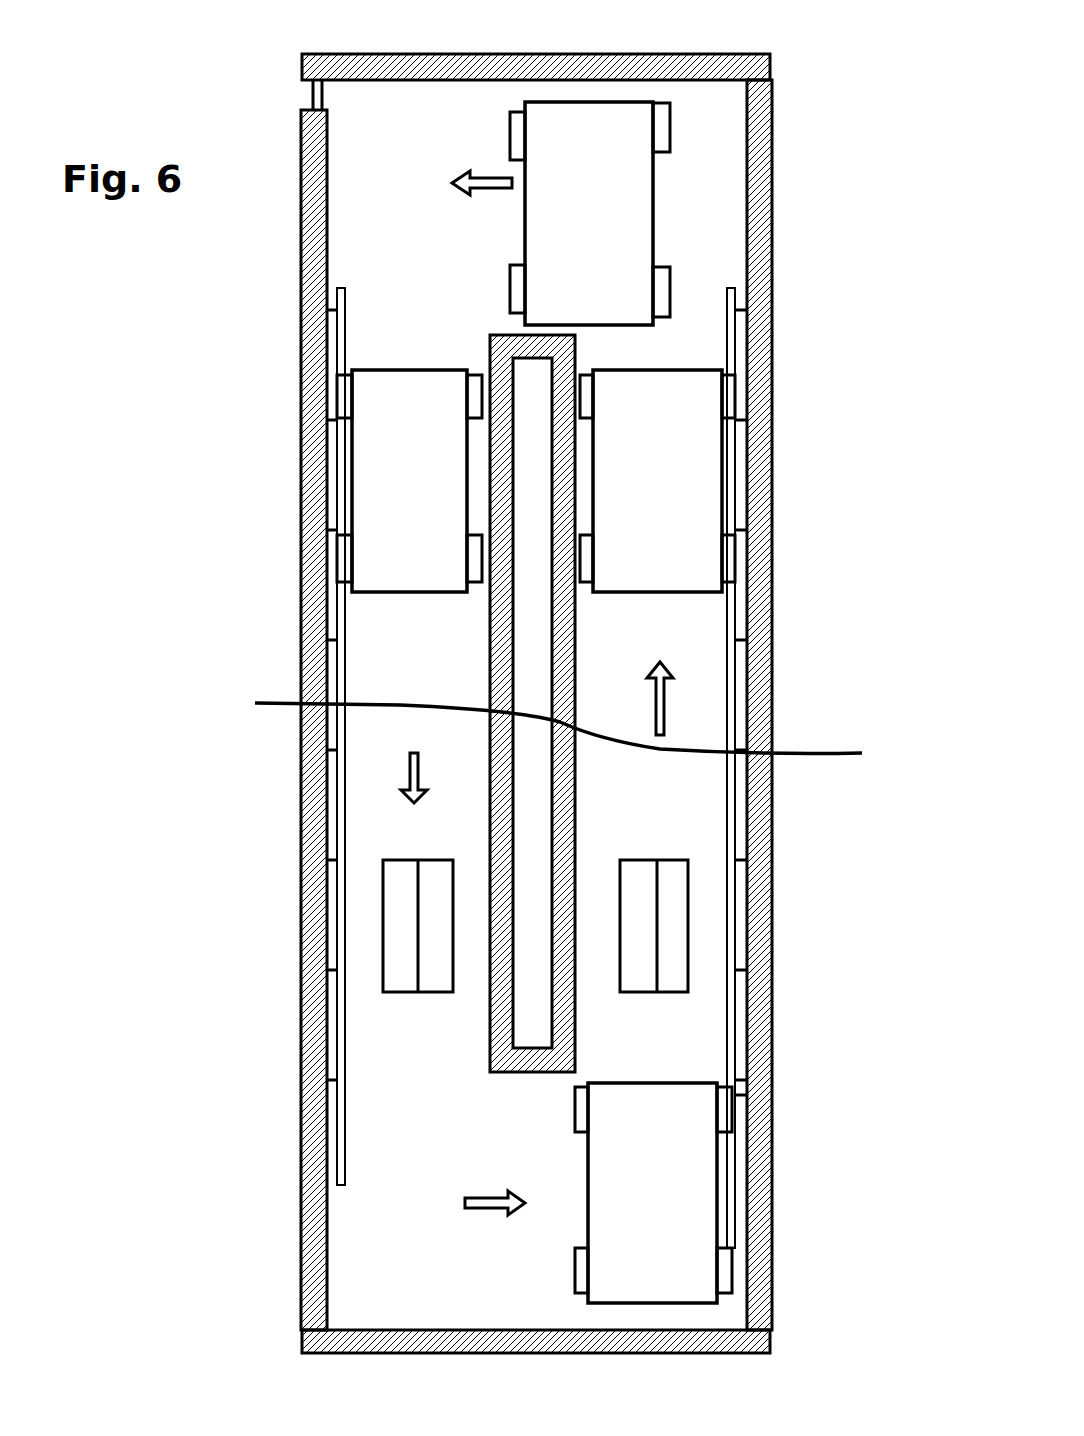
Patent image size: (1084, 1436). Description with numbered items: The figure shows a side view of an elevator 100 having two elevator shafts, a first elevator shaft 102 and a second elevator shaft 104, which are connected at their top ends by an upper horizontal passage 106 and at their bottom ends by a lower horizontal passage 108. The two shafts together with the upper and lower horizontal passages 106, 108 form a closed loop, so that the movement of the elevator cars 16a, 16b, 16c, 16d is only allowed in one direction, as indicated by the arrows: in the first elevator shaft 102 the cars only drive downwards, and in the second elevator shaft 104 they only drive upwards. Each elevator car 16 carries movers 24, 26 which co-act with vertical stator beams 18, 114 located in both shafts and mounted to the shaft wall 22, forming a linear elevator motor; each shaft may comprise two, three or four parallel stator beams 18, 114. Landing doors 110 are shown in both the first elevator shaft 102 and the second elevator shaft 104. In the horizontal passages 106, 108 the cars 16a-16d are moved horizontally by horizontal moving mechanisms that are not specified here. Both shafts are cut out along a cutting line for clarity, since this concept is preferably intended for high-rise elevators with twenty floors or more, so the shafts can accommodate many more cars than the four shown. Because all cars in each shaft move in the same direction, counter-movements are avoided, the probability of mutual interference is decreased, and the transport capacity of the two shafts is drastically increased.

The elevator 100 is at (262, 134).
The upper horizontal passage 106 is at (447, 137).
The first elevator shaft 102 is at (420, 650).
The second elevator shaft 104 is at (690, 637).
The lower horizontal passage 108 is at (490, 1245).
The landing doors 110 is at (410, 943).
The elevator car 16 is at (280, 705).
The elevator car 16a is at (593, 175).
The elevator car 16b is at (655, 465).
The elevator car 16c is at (655, 1188).
The elevator car 16d is at (383, 465).
The stator beam 18 is at (537, 768).
The stator beam 114 is at (733, 830).
The shaft wall 22 is at (757, 660).
The mover 24 is at (668, 290).
The mover 26 is at (515, 135).